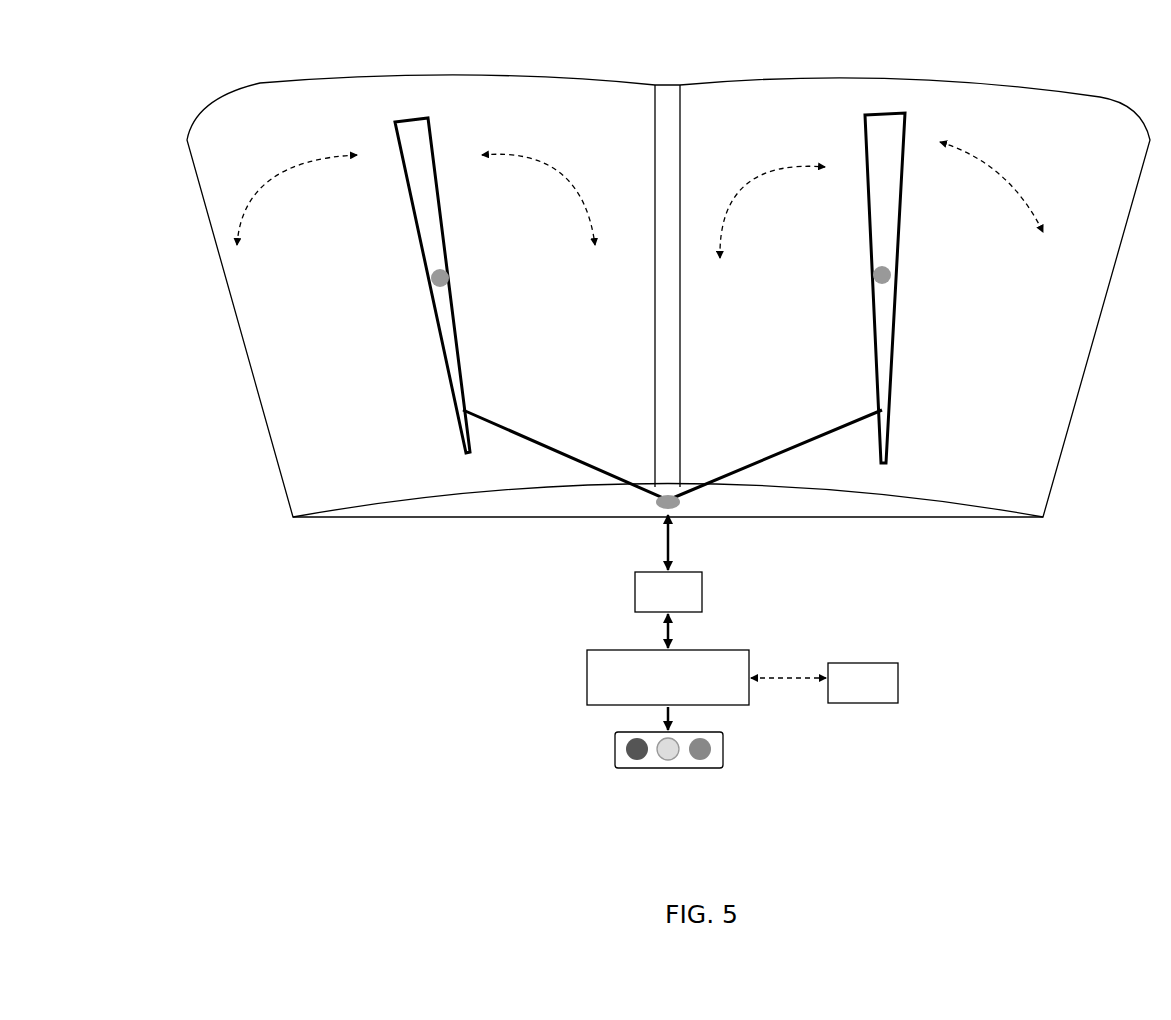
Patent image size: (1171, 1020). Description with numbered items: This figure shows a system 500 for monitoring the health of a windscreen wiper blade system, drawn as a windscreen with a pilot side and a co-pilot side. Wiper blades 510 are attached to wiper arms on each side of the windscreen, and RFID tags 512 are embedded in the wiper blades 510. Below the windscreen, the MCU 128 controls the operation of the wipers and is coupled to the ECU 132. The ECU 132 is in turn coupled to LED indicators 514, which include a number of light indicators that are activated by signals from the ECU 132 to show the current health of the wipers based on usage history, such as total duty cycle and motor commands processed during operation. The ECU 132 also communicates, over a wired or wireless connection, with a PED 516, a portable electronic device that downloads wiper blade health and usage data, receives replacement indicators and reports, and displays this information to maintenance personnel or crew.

The system 500 is at (720, 29).
The wiper blades 510 is at (410, 200).
The RFID tags 512 is at (428, 282).
The MCU 128 is at (635, 590).
The ECU 132 is at (595, 685).
The LED indicators 514 is at (615, 740).
The PED 516 is at (888, 683).